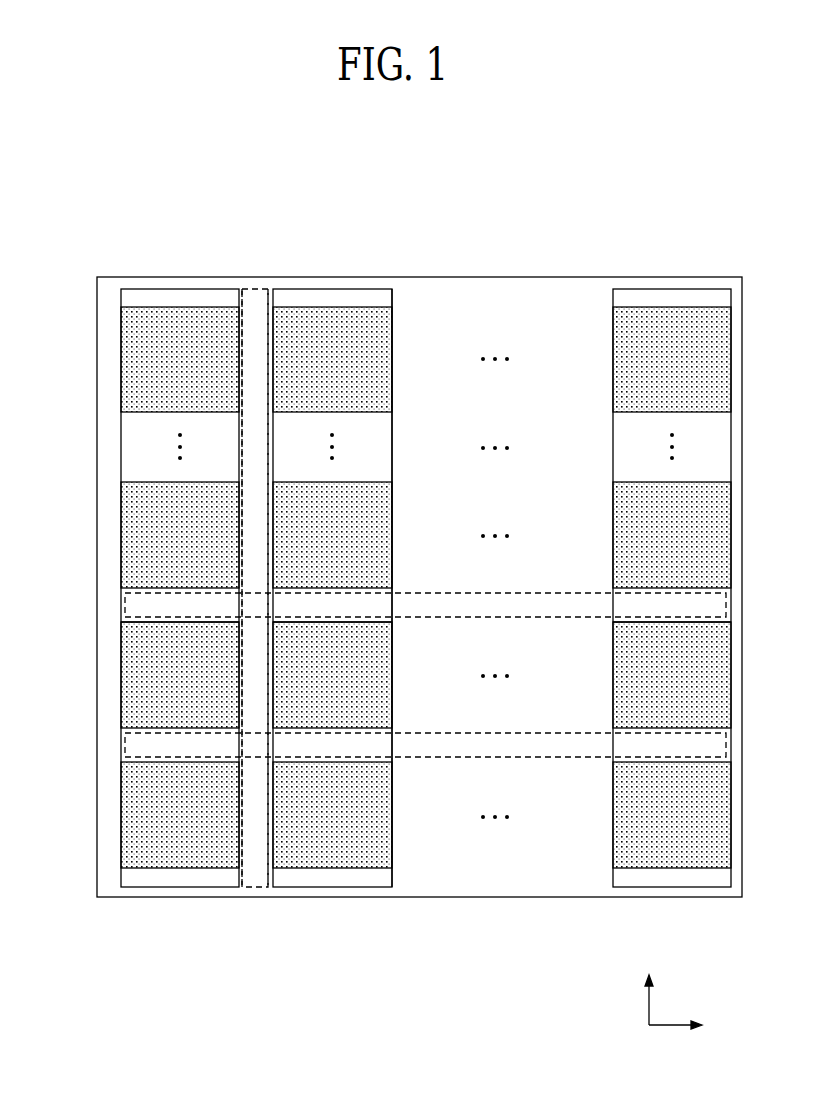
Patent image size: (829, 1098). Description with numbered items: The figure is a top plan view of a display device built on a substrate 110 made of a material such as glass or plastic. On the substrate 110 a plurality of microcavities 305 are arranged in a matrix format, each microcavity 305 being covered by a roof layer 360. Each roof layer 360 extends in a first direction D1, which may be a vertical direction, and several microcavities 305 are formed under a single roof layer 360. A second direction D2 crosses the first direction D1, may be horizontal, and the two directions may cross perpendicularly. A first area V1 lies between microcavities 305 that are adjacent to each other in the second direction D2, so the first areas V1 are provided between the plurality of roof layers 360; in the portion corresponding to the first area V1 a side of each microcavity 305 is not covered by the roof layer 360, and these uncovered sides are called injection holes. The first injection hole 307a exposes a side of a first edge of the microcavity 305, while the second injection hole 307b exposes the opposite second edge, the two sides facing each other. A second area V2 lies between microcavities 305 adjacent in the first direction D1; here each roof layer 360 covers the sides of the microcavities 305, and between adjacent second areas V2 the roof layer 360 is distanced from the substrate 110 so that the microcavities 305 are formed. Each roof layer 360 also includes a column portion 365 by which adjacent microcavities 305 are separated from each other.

The substrate 110 is at (97, 515).
The microcavity 305 is at (172, 828).
The first injection hole 307a is at (270, 330).
The second injection hole 307b is at (243, 322).
The roof layer 360 is at (197, 887).
The column portion 365 is at (119, 620).
The first area V1 is at (253, 887).
The second area V2 is at (125, 600).
The first direction D1 is at (647, 985).
The second direction D2 is at (689, 1027).